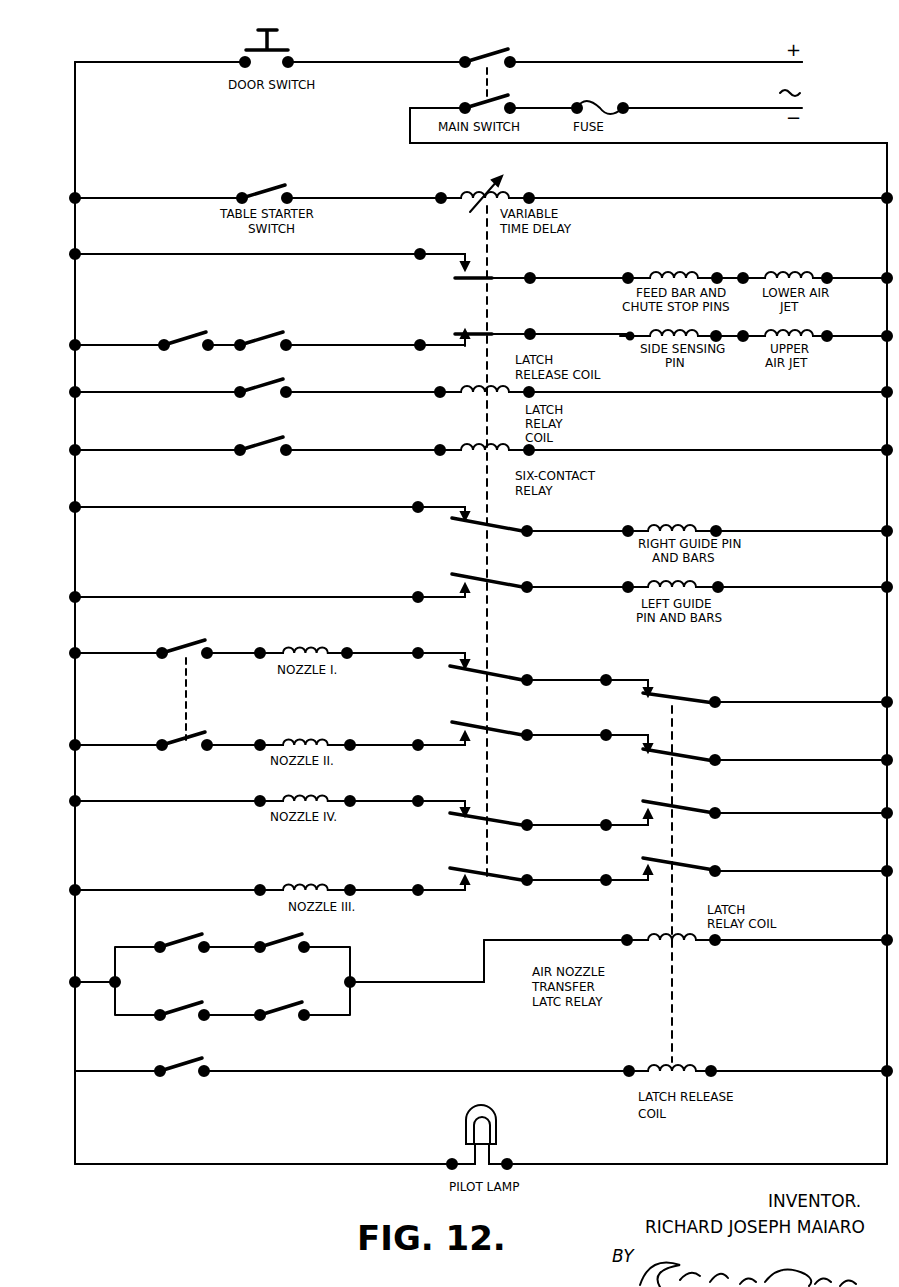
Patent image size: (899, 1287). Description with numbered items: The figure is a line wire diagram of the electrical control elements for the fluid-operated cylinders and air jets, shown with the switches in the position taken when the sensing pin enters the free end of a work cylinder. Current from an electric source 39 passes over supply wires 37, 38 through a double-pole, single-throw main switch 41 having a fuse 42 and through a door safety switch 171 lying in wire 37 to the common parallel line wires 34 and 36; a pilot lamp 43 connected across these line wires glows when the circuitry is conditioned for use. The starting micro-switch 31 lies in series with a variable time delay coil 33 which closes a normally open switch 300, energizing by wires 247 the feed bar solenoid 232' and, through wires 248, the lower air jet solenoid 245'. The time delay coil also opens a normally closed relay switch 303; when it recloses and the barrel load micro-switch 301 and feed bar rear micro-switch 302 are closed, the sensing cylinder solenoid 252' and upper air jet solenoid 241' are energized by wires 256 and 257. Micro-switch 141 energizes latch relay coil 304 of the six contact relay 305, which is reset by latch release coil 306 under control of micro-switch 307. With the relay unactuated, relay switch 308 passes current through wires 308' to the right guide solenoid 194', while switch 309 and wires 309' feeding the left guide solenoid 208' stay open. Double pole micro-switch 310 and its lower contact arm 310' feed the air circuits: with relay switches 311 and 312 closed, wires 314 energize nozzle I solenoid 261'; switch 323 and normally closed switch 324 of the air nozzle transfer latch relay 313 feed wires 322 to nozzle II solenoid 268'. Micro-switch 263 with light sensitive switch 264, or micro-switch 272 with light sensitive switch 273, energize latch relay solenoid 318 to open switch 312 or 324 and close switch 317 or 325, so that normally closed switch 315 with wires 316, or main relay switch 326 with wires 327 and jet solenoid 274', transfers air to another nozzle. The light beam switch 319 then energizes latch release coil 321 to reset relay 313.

The door safety switch 171 is at (270, 47).
The main switch 41 is at (482, 76).
The supply wire 37 is at (700, 30).
The supply wire 38 is at (671, 110).
The electric source 39 is at (807, 90).
The fuse 42 is at (622, 80).
The line wire 34 is at (75, 157).
The line wire 36 is at (887, 171).
The starting micro-switch 31 is at (266, 189).
The variable time delay operating coil 33 is at (485, 186).
The wires 247 is at (152, 226).
The normally open switch 300 is at (494, 278).
The solenoid 232' is at (672, 254).
The solenoid 245' is at (774, 254).
The wires 248 is at (855, 264).
The normally closed relay switch 303 is at (540, 312).
The solenoid 252' is at (644, 320).
The solenoid 241' is at (774, 324).
The wires 257 is at (852, 326).
The wires 256 is at (134, 315).
The barrel load micro-switch 301 is at (200, 308).
The feed bar rear micro-switch 302 is at (256, 336).
The latch release coil micro-switch 307 is at (258, 390).
The latch release coil 306 is at (480, 388).
The feed bar sensing micro-switch 141 is at (280, 418).
The latch relay coil 304 is at (480, 444).
The six contact relay 305 is at (478, 490).
The wires 308' is at (269, 497).
The relay switch 308 is at (519, 533).
The right cylinder guides solenoid 194' is at (757, 508).
The wires 309' is at (269, 584).
The micro-switch 309 is at (519, 573).
The solenoid 208' is at (736, 573).
The wires 314 is at (130, 634).
The double pole micro-switch 310 is at (183, 680).
The air feed solenoid coil 261' is at (303, 638).
The relay switch 311 is at (494, 667).
The relay switch 312 is at (686, 696).
The air nozzle transfer latch relay 313 is at (674, 986).
The wires 322 is at (128, 722).
The lower contact arm 310' is at (173, 730).
The solenoid 268' is at (305, 727).
The main relay switch 323 is at (502, 722).
The air transfer relay switch 324 is at (691, 752).
The wires 316 is at (170, 780).
The jet solenoid 274' is at (297, 787).
The normally closed switch 315 is at (540, 790).
The normally open switch 317 is at (676, 806).
The wires 327 is at (174, 862).
The main relay switch 326 is at (490, 878).
The air transfer relay switch arm 325 is at (684, 864).
The latch relay solenoid 318 is at (664, 940).
The micro-switch 263 is at (176, 920).
The light sensitive switch device 264 is at (282, 920).
The micro-switch 272 is at (194, 988).
The light sensitive switch 273 is at (298, 988).
The light beam sensitive switch device 319 is at (196, 1044).
The latch release coil 321 is at (658, 1066).
The pilot lamp 43 is at (494, 1124).